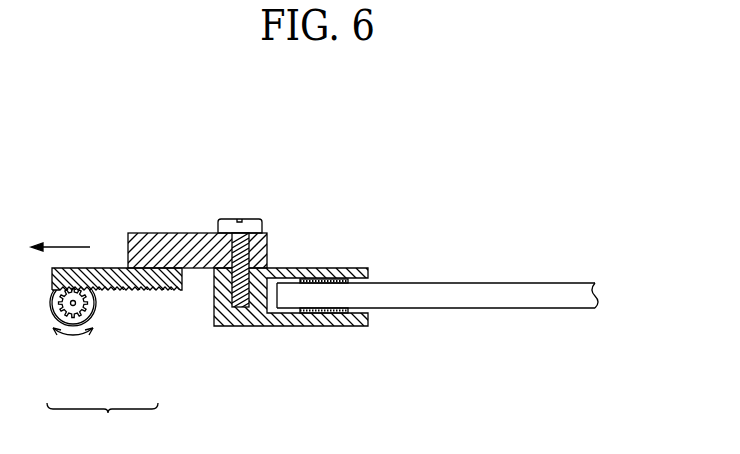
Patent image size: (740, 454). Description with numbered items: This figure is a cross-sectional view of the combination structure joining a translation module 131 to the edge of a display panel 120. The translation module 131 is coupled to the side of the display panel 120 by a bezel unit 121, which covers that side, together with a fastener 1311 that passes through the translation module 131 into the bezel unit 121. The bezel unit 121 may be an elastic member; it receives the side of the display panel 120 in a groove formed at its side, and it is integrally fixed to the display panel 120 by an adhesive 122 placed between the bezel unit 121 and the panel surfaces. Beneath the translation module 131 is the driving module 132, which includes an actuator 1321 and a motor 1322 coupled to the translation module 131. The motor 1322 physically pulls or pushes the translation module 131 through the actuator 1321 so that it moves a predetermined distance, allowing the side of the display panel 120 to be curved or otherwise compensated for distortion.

The display panel 120 is at (535, 283).
The bezel unit 121 is at (327, 267).
The adhesive 122 is at (320, 284).
The translation module 131 is at (168, 232).
The fastener 1311 is at (252, 218).
The driving module 132 is at (102, 423).
The actuator 1321 is at (128, 292).
The motor 1322 is at (80, 331).